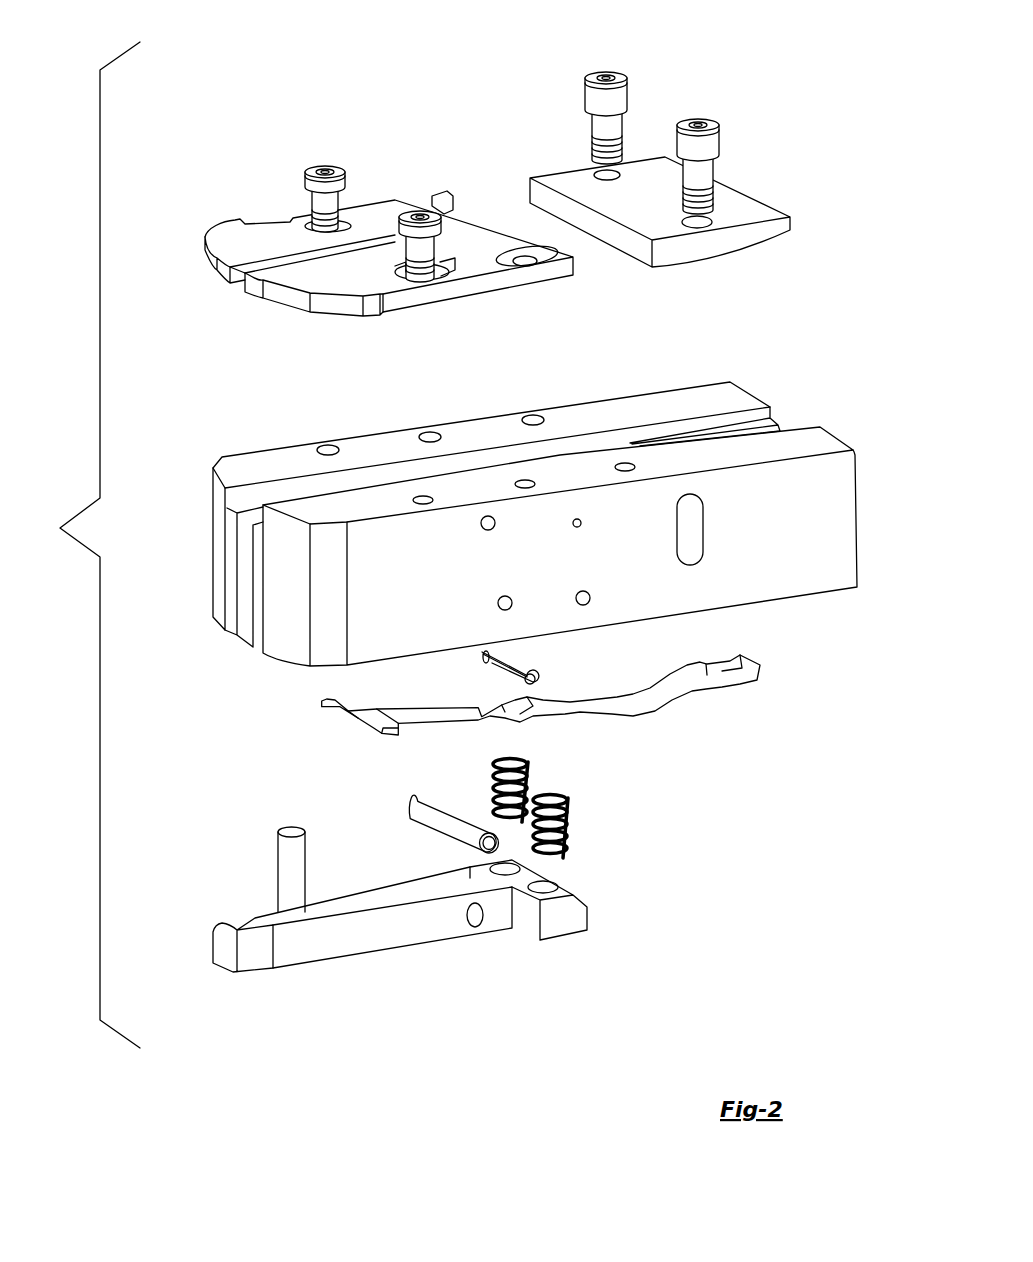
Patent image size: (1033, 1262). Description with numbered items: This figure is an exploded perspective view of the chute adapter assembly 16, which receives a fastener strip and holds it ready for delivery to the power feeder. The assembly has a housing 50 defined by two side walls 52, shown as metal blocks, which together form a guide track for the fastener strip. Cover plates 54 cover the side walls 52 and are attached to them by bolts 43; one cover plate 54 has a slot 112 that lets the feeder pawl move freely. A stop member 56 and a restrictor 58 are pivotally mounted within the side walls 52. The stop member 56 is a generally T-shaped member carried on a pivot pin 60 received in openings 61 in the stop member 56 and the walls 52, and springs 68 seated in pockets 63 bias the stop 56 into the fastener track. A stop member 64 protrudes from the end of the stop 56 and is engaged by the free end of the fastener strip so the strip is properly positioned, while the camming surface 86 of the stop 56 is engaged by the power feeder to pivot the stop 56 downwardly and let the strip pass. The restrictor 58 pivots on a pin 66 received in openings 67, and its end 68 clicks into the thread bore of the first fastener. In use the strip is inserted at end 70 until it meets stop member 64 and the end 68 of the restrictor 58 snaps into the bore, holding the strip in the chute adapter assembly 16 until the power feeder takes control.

The chute adapter assembly 16 is at (86, 545).
The bolts 43 is at (320, 172).
The housing 50 is at (531, 635).
The side walls 52 is at (558, 493).
The cover plates 54 is at (472, 195).
The stop member 56 is at (418, 884).
The restrictor 58 is at (464, 726).
The pivot pin 60 is at (439, 805).
The openings 61 is at (508, 607).
The pockets 63 is at (503, 867).
The stop member 64 is at (287, 870).
The pin 66 is at (485, 668).
The openings 67 is at (320, 703).
The springs / end of restrictor 68 is at (528, 772).
The end 70 is at (833, 440).
The camming surface 86 is at (248, 952).
The slot 112 is at (230, 283).